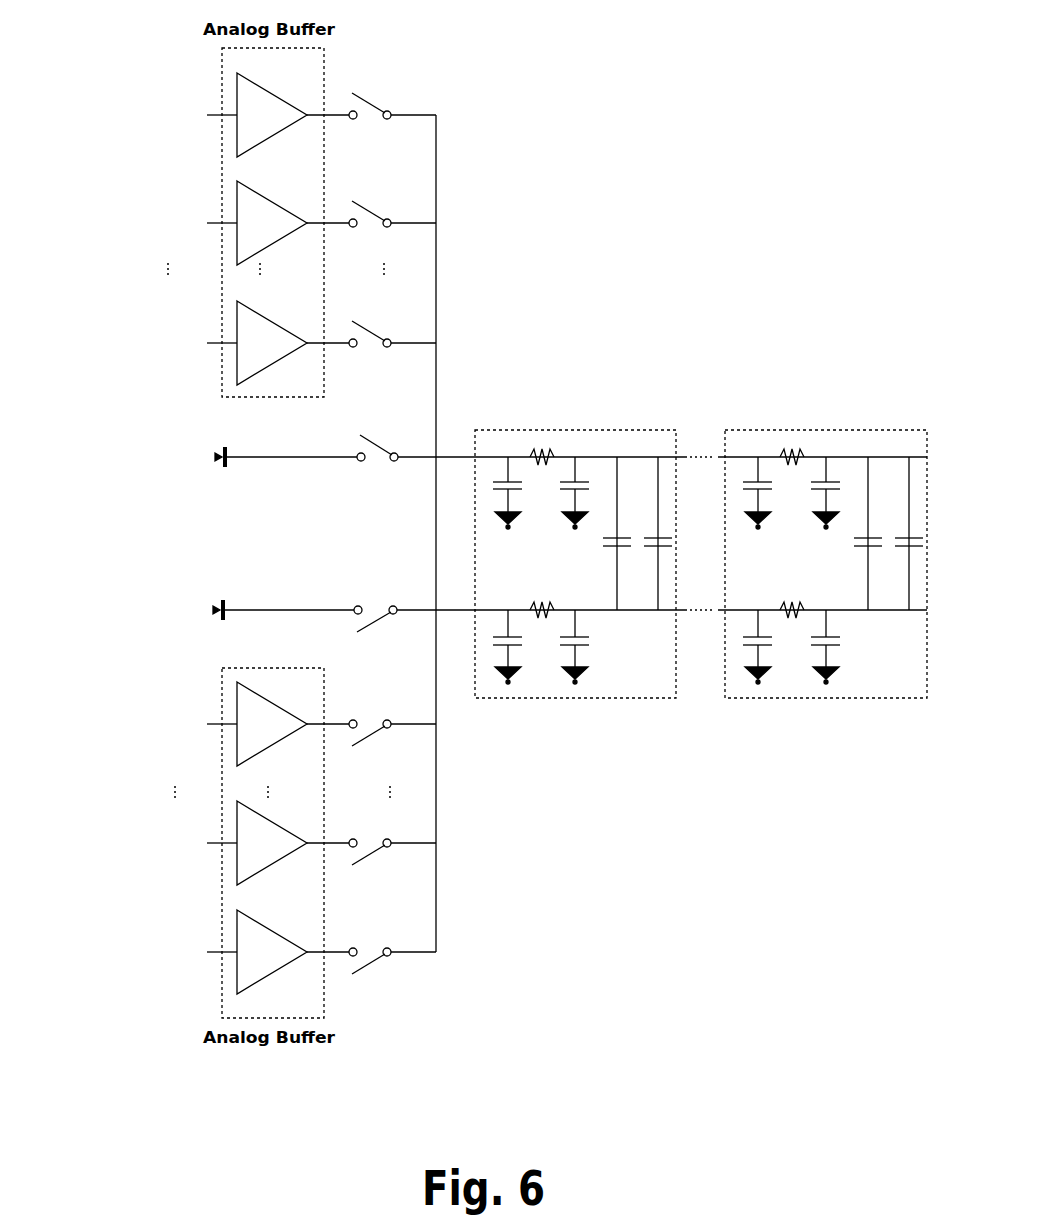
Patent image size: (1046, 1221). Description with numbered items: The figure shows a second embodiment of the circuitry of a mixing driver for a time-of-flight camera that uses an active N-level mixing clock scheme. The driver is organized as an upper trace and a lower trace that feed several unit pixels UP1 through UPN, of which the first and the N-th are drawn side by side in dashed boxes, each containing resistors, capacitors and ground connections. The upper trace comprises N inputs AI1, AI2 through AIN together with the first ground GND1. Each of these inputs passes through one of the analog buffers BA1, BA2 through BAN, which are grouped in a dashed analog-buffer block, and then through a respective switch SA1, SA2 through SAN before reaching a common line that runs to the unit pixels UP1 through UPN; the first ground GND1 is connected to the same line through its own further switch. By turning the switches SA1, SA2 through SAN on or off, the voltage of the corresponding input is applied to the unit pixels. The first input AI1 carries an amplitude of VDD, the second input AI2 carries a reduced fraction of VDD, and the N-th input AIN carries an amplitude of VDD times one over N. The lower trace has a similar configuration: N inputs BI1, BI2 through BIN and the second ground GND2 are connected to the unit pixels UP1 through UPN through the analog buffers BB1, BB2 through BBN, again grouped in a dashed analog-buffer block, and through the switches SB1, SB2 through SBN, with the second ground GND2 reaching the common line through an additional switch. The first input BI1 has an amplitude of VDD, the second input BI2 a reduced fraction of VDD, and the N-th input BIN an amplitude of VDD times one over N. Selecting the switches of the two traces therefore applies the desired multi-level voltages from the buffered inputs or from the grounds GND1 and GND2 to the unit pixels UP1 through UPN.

The first input of the upper trace AI1 is at (141, 117).
The second input of the upper trace AI2 is at (141, 225).
The N-th input of the upper trace AIN is at (141, 345).
The first input of the lower trace BI1 is at (141, 952).
The second input of the lower trace BI2 is at (141, 842).
The N-th input of the lower trace BIN is at (141, 726).
The analog buffer BA1 is at (293, 115).
The analog buffer BA2 is at (293, 223).
The analog buffer BAN is at (293, 343).
The analog buffer BB1 is at (293, 952).
The analog buffer BB2 is at (293, 843).
The analog buffer BBN is at (293, 724).
The switch SA1 is at (392, 93).
The switch SA2 is at (392, 201).
The switch SAN is at (392, 321).
The switch SB1 is at (392, 973).
The switch SB2 is at (392, 865).
The switch SBN is at (392, 744).
The first ground GND1 is at (252, 457).
The second ground GND2 is at (249, 611).
The unit pixel UP1 is at (633, 430).
The unit pixel UPN is at (880, 430).